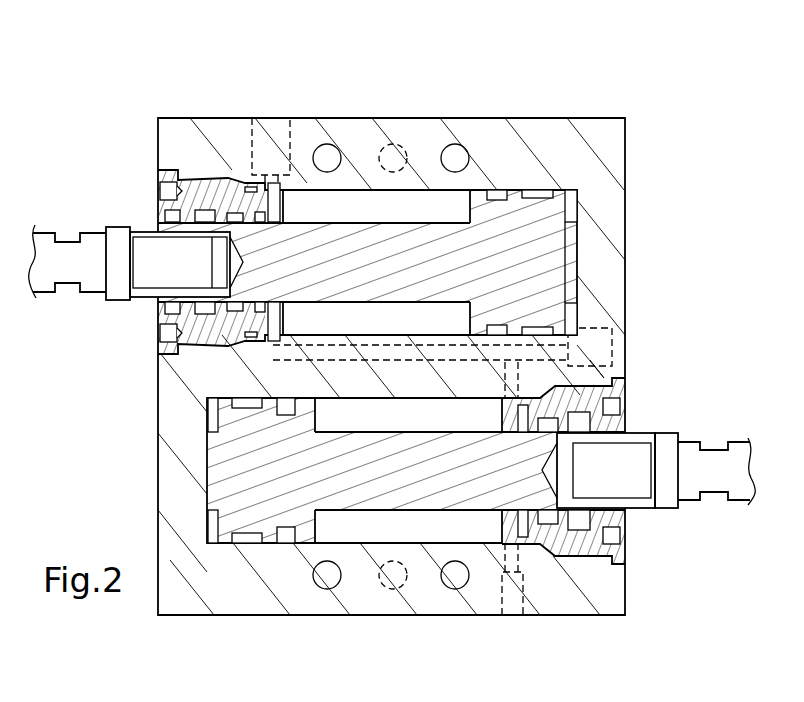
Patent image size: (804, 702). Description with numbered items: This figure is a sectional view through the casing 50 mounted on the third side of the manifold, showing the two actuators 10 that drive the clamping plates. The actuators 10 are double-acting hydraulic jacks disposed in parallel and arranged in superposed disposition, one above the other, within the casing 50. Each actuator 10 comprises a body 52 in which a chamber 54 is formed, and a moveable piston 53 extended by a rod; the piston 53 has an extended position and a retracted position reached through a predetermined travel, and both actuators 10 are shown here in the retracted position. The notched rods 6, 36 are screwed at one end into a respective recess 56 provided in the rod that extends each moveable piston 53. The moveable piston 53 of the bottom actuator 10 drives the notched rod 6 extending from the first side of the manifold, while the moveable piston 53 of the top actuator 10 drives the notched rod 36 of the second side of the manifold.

The actuator 10 is at (625, 118).
The casing 50 is at (158, 118).
The body 52 is at (495, 165).
The moveable piston 53 is at (562, 262).
The chamber 54 is at (355, 205).
The recess 56 is at (170, 270).
The notched rod 36 is at (44, 232).
The notched rod 6 is at (717, 460).